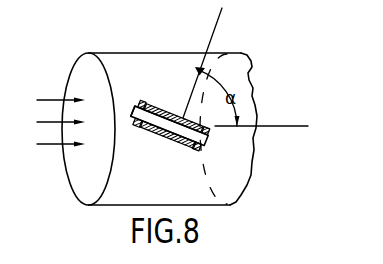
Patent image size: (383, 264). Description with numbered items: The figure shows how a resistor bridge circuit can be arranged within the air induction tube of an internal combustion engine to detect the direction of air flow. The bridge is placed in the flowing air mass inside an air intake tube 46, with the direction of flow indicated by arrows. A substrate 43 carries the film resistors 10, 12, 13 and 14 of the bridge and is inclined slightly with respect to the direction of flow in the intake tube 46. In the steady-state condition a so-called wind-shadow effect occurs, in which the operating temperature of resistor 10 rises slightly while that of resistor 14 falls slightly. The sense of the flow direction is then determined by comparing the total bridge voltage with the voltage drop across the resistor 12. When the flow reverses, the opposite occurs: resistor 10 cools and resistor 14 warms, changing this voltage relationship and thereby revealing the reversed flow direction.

The film resistor 10 is at (176, 111).
The film resistor 12 is at (143, 100).
The film resistor 13 is at (134, 126).
The film resistor 14 is at (158, 134).
The substrate 43 is at (134, 105).
The air intake tube 46 is at (160, 53).